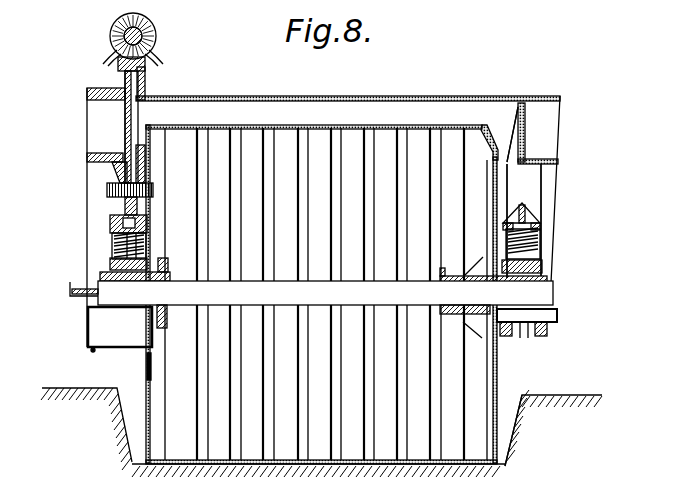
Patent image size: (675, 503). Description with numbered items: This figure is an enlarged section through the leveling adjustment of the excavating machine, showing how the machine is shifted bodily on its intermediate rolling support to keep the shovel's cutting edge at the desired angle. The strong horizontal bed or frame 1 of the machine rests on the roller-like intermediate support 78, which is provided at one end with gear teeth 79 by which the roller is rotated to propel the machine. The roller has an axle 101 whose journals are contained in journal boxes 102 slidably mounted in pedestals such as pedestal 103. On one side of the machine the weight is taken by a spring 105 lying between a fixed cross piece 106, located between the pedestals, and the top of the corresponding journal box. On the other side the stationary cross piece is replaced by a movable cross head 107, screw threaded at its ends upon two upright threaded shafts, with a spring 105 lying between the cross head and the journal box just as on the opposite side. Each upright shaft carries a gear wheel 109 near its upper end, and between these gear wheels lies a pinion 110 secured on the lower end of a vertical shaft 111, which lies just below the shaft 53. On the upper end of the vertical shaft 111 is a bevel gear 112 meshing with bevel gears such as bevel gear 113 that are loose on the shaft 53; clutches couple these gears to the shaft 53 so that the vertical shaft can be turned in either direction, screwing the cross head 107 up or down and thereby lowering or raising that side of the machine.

The bed or frame 1 is at (525, 135).
The shaft 53 is at (115, 40).
The intermediate roller-like support 78 is at (472, 370).
The gear teeth 79 is at (497, 455).
The axle 101 is at (545, 293).
The journal box 102 is at (97, 323).
The pedestal 103 is at (548, 187).
The spring 105 is at (115, 248).
The fixed cross piece 106 is at (532, 218).
The movable cross head 107 is at (110, 222).
The gear wheel 109 is at (147, 192).
The pinion 110 is at (127, 150).
The vertical shaft 111 is at (133, 113).
The bevel gear 112 is at (160, 65).
The bevel gear 113 is at (148, 20).